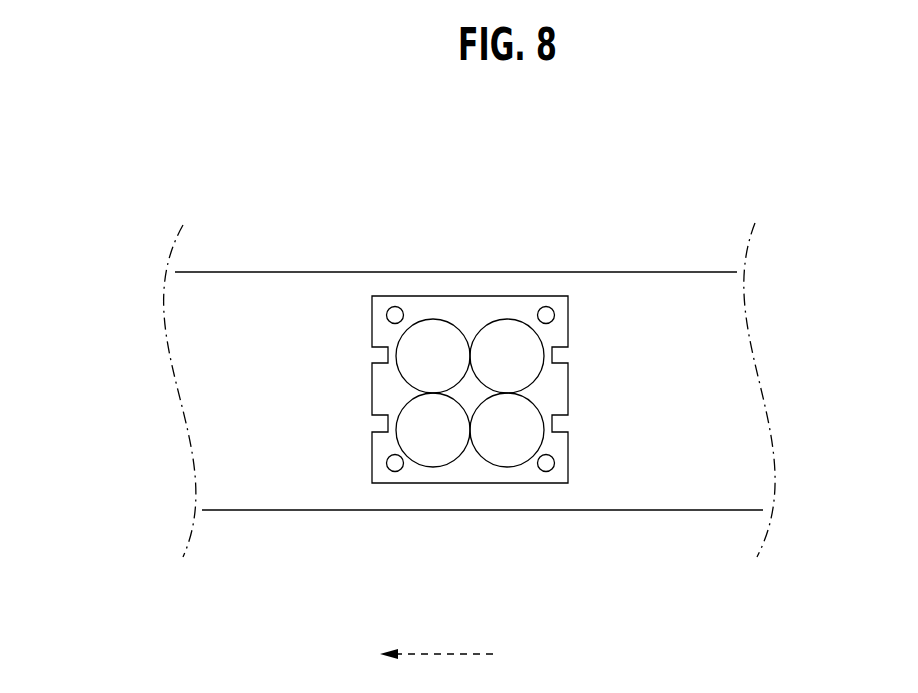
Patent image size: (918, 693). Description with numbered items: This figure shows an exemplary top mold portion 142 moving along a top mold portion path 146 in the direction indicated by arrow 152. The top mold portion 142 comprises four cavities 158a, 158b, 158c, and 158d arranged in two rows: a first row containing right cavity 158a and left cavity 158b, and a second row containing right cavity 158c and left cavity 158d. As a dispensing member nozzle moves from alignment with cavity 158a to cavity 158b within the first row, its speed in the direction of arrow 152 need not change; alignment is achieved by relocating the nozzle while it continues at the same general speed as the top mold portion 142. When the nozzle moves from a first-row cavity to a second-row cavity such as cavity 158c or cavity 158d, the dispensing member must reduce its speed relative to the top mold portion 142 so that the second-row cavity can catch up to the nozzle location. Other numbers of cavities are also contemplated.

The top mold portion 142 is at (533, 297).
The top mold portion path 146 is at (640, 270).
The arrow 152 is at (461, 654).
The cavity 158a is at (433, 320).
The cavity 158b is at (433, 465).
The cavity 158c is at (507, 320).
The cavity 158d is at (507, 465).